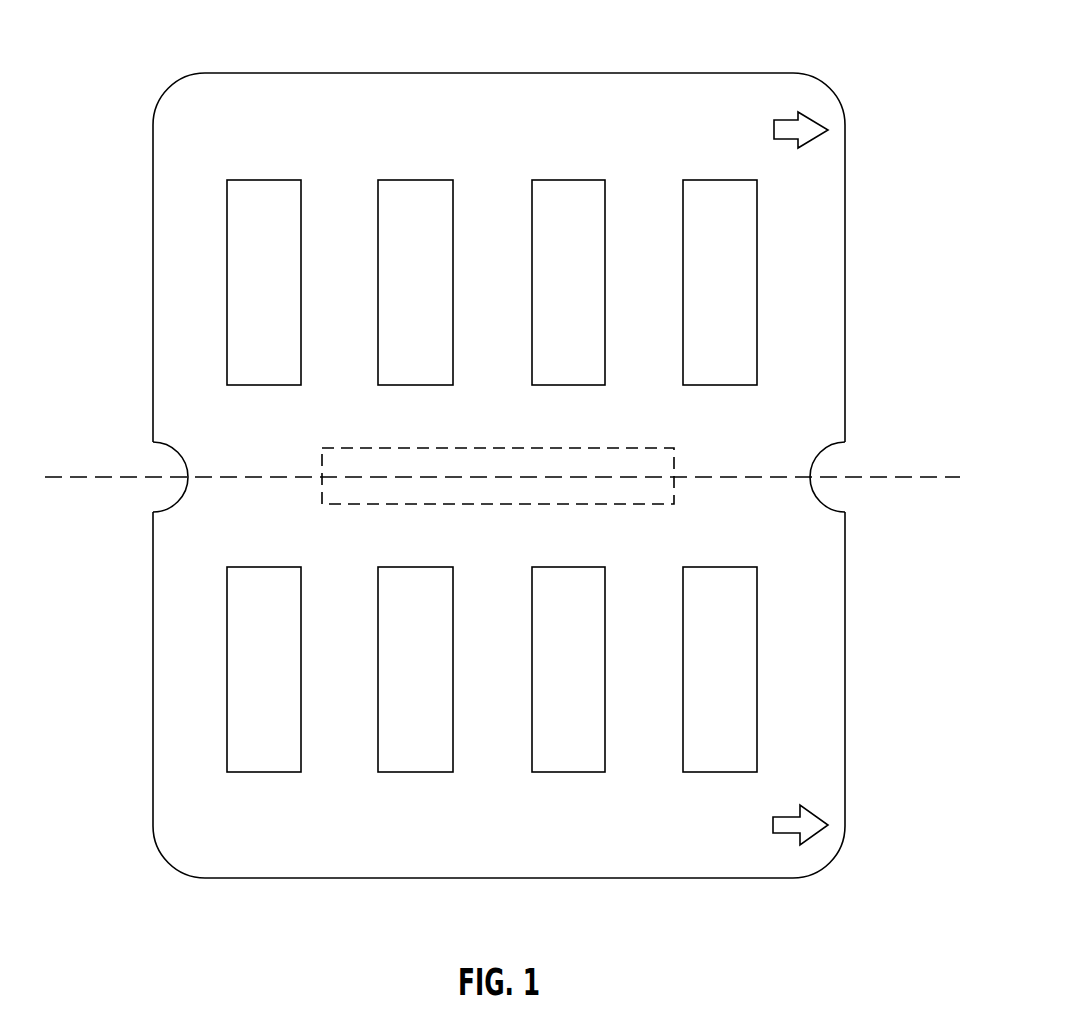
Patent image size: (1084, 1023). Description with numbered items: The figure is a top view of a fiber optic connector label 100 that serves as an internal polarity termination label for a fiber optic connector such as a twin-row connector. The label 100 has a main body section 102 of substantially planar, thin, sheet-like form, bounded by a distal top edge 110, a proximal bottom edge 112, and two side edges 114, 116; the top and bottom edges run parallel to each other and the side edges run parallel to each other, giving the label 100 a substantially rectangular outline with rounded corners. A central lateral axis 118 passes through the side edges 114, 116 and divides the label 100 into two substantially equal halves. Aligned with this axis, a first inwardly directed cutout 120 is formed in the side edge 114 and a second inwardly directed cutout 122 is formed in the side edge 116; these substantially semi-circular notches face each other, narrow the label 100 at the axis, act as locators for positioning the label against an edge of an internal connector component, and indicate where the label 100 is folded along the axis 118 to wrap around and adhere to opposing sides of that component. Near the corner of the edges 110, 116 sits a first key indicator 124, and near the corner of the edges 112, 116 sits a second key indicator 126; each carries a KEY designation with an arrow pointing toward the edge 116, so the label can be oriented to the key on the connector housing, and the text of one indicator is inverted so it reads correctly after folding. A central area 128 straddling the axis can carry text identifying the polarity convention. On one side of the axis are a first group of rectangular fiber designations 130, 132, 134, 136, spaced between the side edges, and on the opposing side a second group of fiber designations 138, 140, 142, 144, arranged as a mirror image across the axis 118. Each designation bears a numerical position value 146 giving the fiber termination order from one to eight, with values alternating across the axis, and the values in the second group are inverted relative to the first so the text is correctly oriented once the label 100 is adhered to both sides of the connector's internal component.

The fiber optic connector label 100 is at (826, 29).
The main body section 102 is at (233, 92).
The top edge 110 is at (497, 72).
The bottom edge 112 is at (303, 878).
The side edge 114 is at (152, 184).
The side edge 116 is at (846, 285).
The central lateral axis 118 is at (727, 475).
The first inwardly directed cutout 120 is at (172, 455).
The second inwardly directed cutout 122 is at (826, 450).
The first key indicator 124 is at (785, 142).
The second key indicator 126 is at (790, 805).
The central area 128 is at (393, 448).
The fiber designation 130 is at (692, 180).
The fiber designation 132 is at (568, 180).
The fiber designation 134 is at (415, 180).
The fiber designation 136 is at (263, 180).
The fiber designation 138 is at (718, 567).
The fiber designation 140 is at (568, 772).
The fiber designation 142 is at (414, 772).
The fiber designation 144 is at (262, 772).
The numerical position value 146 is at (735, 280).